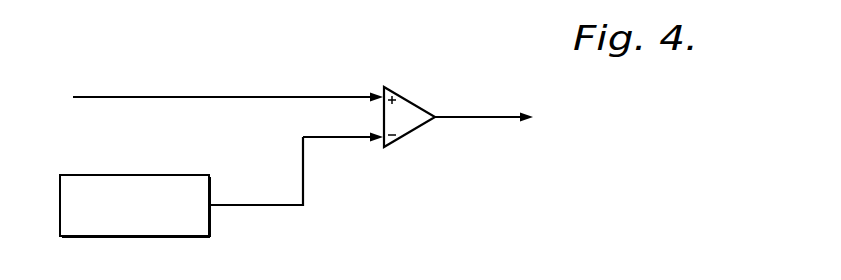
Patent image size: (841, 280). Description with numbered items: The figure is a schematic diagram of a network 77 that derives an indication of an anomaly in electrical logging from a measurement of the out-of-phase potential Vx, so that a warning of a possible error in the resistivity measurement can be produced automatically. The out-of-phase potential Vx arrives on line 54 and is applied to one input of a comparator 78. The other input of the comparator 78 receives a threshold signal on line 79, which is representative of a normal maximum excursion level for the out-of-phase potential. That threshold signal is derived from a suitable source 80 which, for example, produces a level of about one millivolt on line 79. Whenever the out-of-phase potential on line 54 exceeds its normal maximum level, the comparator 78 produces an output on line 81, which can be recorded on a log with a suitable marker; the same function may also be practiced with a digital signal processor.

The line 54 is at (82, 97).
The network 77 is at (280, 72).
The comparator 78 is at (410, 134).
The line 79 is at (304, 177).
The source 80 is at (60, 200).
The line 81 is at (490, 118).